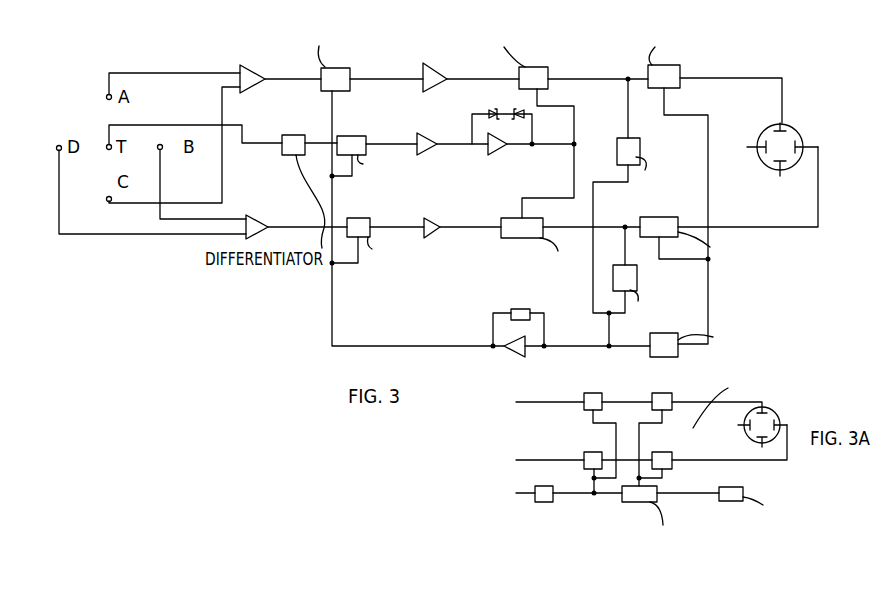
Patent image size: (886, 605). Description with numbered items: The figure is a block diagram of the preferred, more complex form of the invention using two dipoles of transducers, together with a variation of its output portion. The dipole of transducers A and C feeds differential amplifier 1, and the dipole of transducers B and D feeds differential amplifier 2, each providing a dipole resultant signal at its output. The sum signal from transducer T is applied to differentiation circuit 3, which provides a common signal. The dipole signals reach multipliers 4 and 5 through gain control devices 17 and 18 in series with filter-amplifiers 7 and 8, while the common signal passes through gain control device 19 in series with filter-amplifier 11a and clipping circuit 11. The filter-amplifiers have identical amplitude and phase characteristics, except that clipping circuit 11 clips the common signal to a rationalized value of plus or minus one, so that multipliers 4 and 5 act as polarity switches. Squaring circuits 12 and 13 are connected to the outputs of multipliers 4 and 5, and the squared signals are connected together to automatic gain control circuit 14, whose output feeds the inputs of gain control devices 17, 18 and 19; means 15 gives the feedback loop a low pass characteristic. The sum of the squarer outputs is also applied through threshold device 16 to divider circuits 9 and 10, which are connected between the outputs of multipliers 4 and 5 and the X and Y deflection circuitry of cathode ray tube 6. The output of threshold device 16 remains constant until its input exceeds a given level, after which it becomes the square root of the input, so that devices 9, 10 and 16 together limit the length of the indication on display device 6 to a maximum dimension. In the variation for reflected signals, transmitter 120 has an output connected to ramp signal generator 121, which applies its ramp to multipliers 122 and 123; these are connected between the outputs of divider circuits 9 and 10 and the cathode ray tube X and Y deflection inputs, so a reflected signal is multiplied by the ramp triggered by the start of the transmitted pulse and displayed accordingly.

In FIG. 3, the differential amplifier 1 is at (257, 70).
In FIG. 3, the differential amplifier 2 is at (255, 218).
In FIG. 3, the differentiation circuit 3 is at (290, 135).
In FIG. 3, the multiplier 4 is at (532, 67).
In FIG. 3, the multiplier 5 is at (510, 217).
In FIG. 3, the cathode ray tube 6 is at (797, 132).
In FIG. 3, the filter-amplifier 7 is at (433, 65).
In FIG. 3, the filter-amplifier 8 is at (435, 220).
In FIG. 3, the divider circuit 9 is at (668, 65).
In FIG. 3A, the divider circuit 9 is at (598, 392).
In FIG. 3, the divider circuit 10 is at (655, 217).
In FIG. 3A, the divider circuit 10 is at (597, 452).
In FIG. 3, the clipping circuit 11 is at (490, 155).
In FIG. 3, the filter-amplifier 11a is at (425, 155).
In FIG. 3, the squaring circuit 12 is at (640, 147).
In FIG. 3, the squaring circuit 13 is at (637, 279).
In FIG. 3, the automatic gain control circuit 14 is at (520, 357).
In FIG. 3, the low pass means 15 is at (517, 309).
In FIG. 3, the threshold device 16 is at (675, 357).
In FIG. 3A, the threshold device 16 is at (550, 502).
In FIG. 3, the gain control device 17 is at (335, 68).
In FIG. 3, the gain control device 18 is at (358, 218).
In FIG. 3, the gain control device 19 is at (356, 136).
In FIG. 3A, the transmitter 120 is at (733, 486).
In FIG. 3A, the ramp signal generator 121 is at (642, 503).
In FIG. 3A, the multiplier 122 is at (672, 394).
In FIG. 3A, the multiplier 123 is at (660, 452).